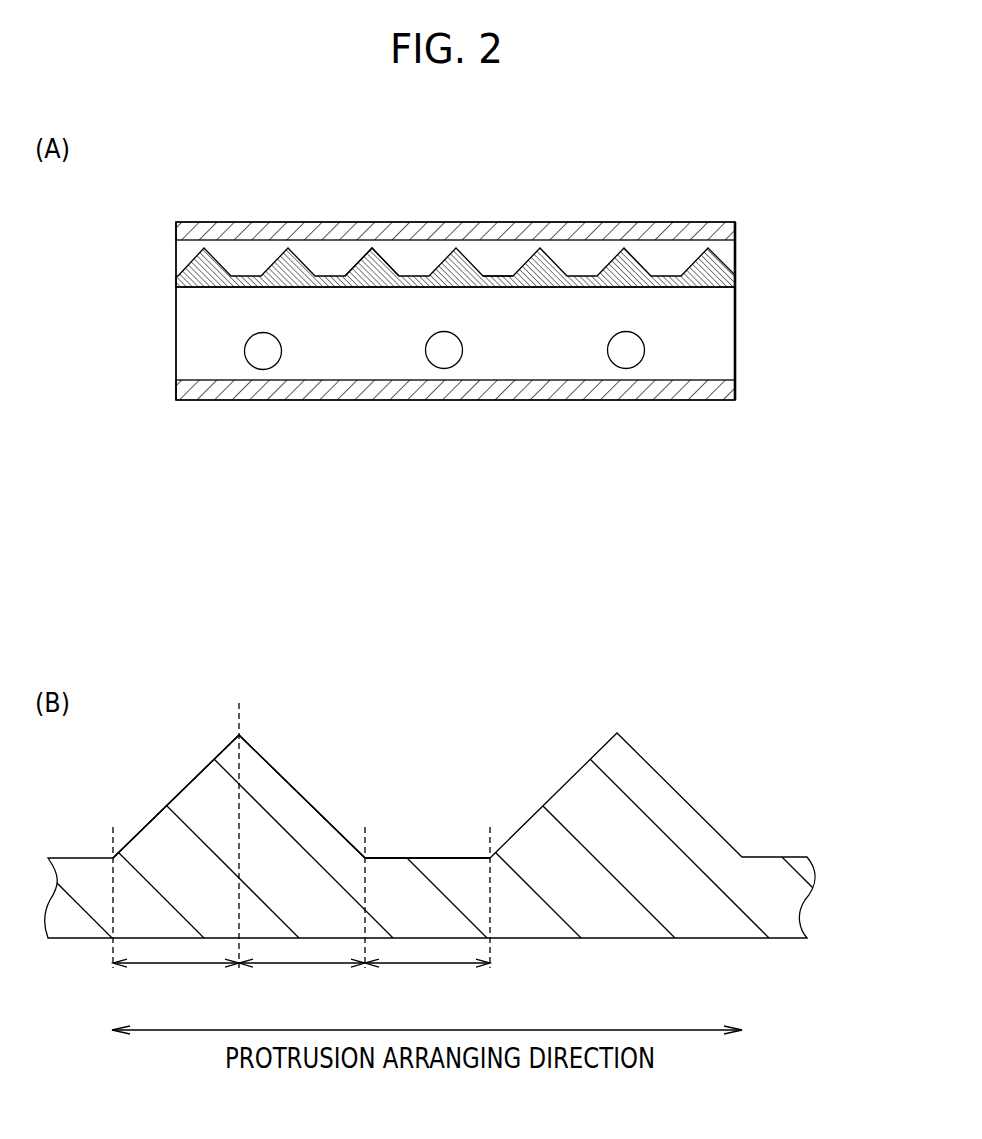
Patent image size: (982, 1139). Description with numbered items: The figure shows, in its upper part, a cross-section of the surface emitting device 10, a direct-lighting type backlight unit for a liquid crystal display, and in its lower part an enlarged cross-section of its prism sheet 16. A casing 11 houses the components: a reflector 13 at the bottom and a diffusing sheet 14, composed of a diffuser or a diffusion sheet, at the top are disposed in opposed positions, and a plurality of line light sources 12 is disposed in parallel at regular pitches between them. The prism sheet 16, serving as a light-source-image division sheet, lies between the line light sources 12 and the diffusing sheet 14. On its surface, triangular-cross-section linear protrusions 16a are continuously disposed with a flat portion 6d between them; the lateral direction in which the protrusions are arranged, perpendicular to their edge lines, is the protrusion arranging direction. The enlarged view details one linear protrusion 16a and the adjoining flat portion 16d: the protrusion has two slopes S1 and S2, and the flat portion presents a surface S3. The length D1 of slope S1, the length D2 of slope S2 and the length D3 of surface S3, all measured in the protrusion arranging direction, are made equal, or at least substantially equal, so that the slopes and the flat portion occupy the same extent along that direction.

The surface emitting device 10 is at (233, 136).
The casing 11 is at (175, 323).
The line light sources 12 is at (270, 358).
The reflector 13 is at (706, 383).
The diffusing sheet 14 is at (647, 221).
The prism sheet 16 is at (733, 270).
The linear protrusions 16a is at (390, 262).
The flat portion 6d is at (495, 275).
The flat portion 16d is at (421, 818).
The slope S1 is at (152, 818).
The slope S2 is at (283, 775).
The surface of the flat portion S3 is at (457, 857).
The length of slope S1 D1 is at (176, 976).
The length of slope S2 D2 is at (302, 976).
The length of flat portion surface D3 is at (427, 976).